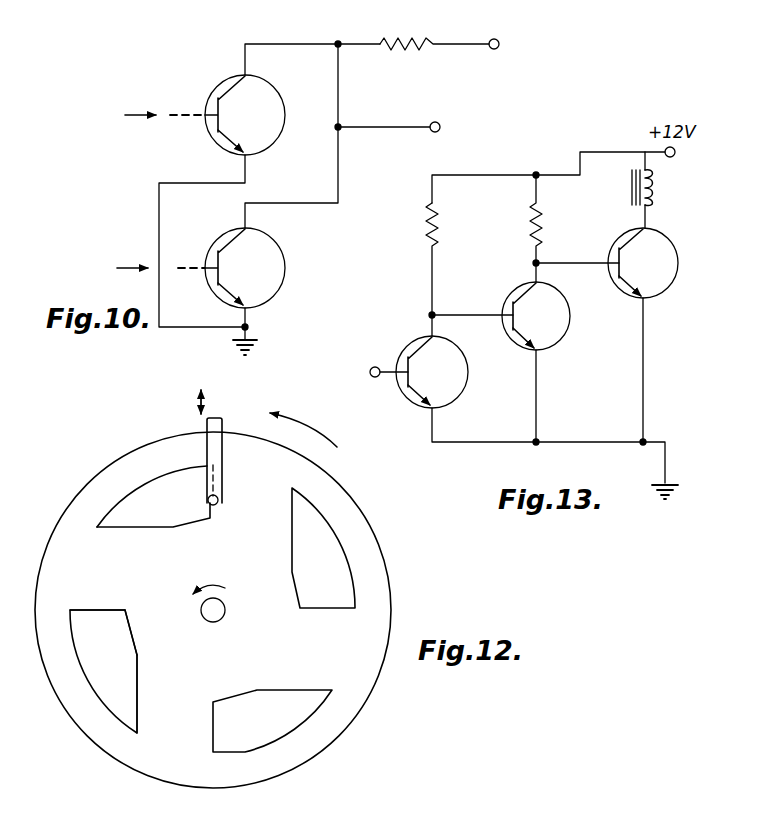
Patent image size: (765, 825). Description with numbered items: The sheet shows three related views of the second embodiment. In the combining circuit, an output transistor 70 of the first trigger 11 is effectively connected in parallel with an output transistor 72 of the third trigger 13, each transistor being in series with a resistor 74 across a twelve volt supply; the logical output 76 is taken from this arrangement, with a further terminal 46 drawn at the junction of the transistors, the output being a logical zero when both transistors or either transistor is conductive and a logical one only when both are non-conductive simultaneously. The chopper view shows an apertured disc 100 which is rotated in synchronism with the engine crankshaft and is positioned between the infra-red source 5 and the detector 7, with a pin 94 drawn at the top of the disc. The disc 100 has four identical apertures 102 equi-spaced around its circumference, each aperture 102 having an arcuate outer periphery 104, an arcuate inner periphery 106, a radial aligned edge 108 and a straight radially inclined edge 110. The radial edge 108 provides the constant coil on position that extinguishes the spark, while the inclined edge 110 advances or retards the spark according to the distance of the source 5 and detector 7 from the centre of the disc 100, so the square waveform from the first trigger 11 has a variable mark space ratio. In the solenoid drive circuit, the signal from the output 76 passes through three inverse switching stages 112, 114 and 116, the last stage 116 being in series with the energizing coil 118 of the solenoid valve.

In FIG. 10, the first trigger 11 is at (165, 99).
In FIG. 10, the third trigger 13 is at (161, 254).
In FIG. 10, the output transistor 70 is at (275, 107).
In FIG. 10, the output transistor 72 is at (270, 272).
In FIG. 10, the resistor 74 is at (410, 50).
In FIG. 10, the output terminal 46 is at (441, 126).
In FIG. 13, the logical output 76 is at (377, 366).
In FIG. 13, the inverse switching stage 112 is at (450, 392).
In FIG. 13, the inverse switching stage 114 is at (553, 335).
In FIG. 13, the inverse switching stage 116 is at (657, 282).
In FIG. 13, the energizing coil 118 is at (650, 201).
In FIG. 12, the apertured disc 100 is at (118, 773).
In FIG. 12, the aperture 102 is at (328, 549).
In FIG. 12, the arcuate outer periphery 104 is at (88, 707).
In FIG. 12, the arcuate inner periphery 106 is at (137, 632).
In FIG. 12, the radial aligned edge 108 is at (101, 608).
In FIG. 12, the radially inclined edge 110 is at (140, 697).
In FIG. 12, the follower pin 94 is at (222, 446).
In FIG. 12, the infra-red source 5 is at (153, 496).
In FIG. 12, the detector 7 is at (206, 503).